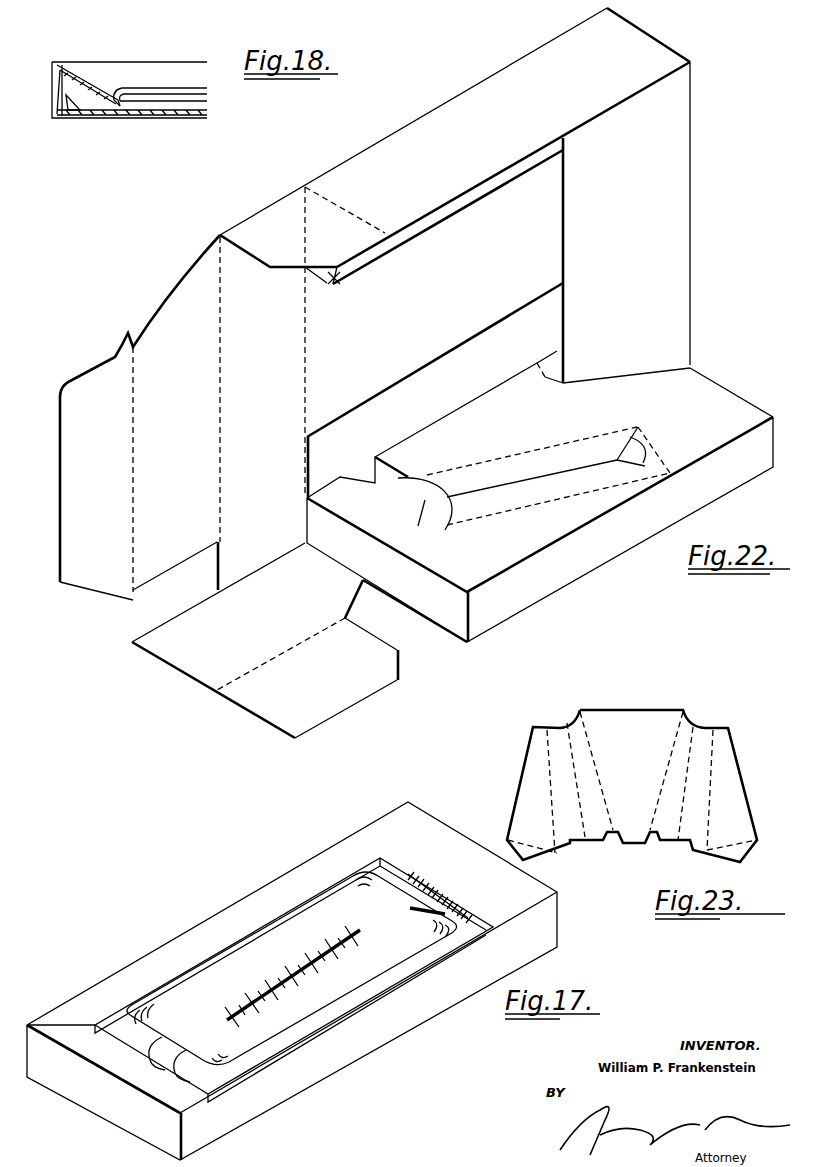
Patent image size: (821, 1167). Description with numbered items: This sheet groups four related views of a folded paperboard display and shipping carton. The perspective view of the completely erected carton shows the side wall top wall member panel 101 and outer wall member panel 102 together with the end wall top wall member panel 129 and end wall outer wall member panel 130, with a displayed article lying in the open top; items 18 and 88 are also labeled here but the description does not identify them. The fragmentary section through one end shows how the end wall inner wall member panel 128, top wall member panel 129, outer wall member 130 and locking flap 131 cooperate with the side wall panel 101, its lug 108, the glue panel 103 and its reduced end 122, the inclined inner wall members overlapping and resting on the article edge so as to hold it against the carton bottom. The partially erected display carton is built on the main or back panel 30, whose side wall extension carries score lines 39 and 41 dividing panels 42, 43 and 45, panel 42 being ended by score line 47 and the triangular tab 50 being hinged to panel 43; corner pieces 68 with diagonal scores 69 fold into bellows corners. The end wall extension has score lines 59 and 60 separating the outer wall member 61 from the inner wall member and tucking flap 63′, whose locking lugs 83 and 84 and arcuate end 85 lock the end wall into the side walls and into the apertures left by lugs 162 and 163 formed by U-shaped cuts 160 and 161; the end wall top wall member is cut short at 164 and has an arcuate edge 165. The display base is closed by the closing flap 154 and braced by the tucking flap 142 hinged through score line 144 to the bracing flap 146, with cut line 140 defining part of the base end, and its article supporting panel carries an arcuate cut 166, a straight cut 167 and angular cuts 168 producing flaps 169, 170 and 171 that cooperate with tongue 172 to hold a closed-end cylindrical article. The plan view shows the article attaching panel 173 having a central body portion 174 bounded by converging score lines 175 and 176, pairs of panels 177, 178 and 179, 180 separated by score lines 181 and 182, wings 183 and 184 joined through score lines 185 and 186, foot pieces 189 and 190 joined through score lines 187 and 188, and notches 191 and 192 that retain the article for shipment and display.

In FIG. 18, the end wall outer wall member panel 130 is at (52, 90).
In FIG. 17, the end wall outer wall member panel 130 is at (58, 1085).
In FIG. 18, the end wall top wall member panel 129 is at (92, 80).
In FIG. 17, the end wall top wall member panel 129 is at (440, 832).
In FIG. 18, the side wall top wall member panel 101 is at (188, 76).
In FIG. 17, the side wall top wall member panel 101 is at (333, 845).
In FIG. 18, the edge of strip 88 is at (208, 110).
In FIG. 18, the lug 108 is at (62, 118).
In FIG. 18, the locking flap panel 131 is at (80, 100).
In FIG. 18, the reduced end portion 122 is at (92, 118).
In FIG. 18, the end wall inner wall member panel 128 is at (110, 100).
In FIG. 18, the glue panel 103 is at (190, 116).
In FIG. 22, the side wall outer wall member panel 42 is at (404, 135).
In FIG. 22, the end wall outer wall member panel 61 is at (652, 38).
In FIG. 22, the side wall top wall member panel 43 is at (512, 165).
In FIG. 22, the glue flap panel 45 is at (505, 180).
In FIG. 22, the end wall inner wall member and tucking flap 63′ is at (561, 242).
In FIG. 22, the corner piece 68 is at (270, 208).
In FIG. 22, the diagonal score 69 is at (305, 242).
In FIG. 22, the score or fold line 47 is at (364, 222).
In FIG. 22, the tab 50 is at (334, 282).
In FIG. 22, the main or bottom panel 30 is at (457, 281).
In FIG. 22, the score or fold line 60 is at (135, 455).
In FIG. 22, the arcuate edge 165 is at (170, 290).
In FIG. 22, the locking lug 83 is at (124, 333).
In FIG. 22, the arcuate end 85 is at (92, 366).
In FIG. 22, the score or fold line 59 is at (222, 375).
In FIG. 22, the cut-short end 164 is at (172, 566).
In FIG. 22, the locking lug 84 is at (133, 600).
In FIG. 22, the closing flap 154 is at (462, 586).
In FIG. 22, the score or fold line 39 is at (636, 545).
In FIG. 22, the score or fold line 41 is at (470, 403).
In FIG. 22, the lug 162 is at (363, 470).
In FIG. 22, the U-shaped cut 160 is at (357, 487).
In FIG. 22, the lug 163 is at (556, 358).
In FIG. 22, the U-shaped cut 161 is at (546, 378).
In FIG. 22, the flap 169 is at (510, 462).
In FIG. 22, the flap 170 is at (520, 500).
In FIG. 22, the straight cut line 167 is at (552, 478).
In FIG. 22, the arcuate cut line 166 is at (452, 485).
In FIG. 22, the tongue 172 is at (436, 505).
In FIG. 22, the flap 171 is at (640, 433).
In FIG. 22, the angular cut lines 168 is at (652, 445).
In FIG. 22, the tucking flap 142 is at (193, 671).
In FIG. 22, the score or fold line 144 is at (300, 645).
In FIG. 22, the bracing flap 146 is at (282, 723).
In FIG. 22, the cut line 140 is at (440, 638).
In FIG. 23, the article attaching panel 173 is at (694, 676).
In FIG. 23, the score or fold line 185 is at (550, 808).
In FIG. 23, the score or fold line 181 is at (595, 800).
In FIG. 23, the score or fold line 175 is at (598, 768).
In FIG. 23, the score or fold line 176 is at (655, 798).
In FIG. 23, the score or fold line 182 is at (678, 820).
In FIG. 23, the score or fold line 186 is at (709, 810).
In FIG. 23, the score or fold line 187 is at (532, 842).
In FIG. 23, the score or fold line 188 is at (730, 846).
In FIG. 23, the panel 177 is at (574, 716).
In FIG. 23, the panel 178 is at (550, 730).
In FIG. 23, the central or body portion 174 is at (640, 714).
In FIG. 23, the panel 179 is at (698, 718).
In FIG. 23, the panel 180 is at (712, 730).
In FIG. 23, the wing 183 is at (522, 778).
In FIG. 23, the wing 184 is at (736, 782).
In FIG. 23, the foot piece 189 is at (545, 855).
In FIG. 23, the notch 191 is at (582, 846).
In FIG. 23, the notch 192 is at (684, 852).
In FIG. 23, the foot piece 190 is at (747, 850).
In FIG. 17, the clip 18 is at (150, 1065).
In FIG. 17, the side wall outer wall member panel 102 is at (390, 1030).